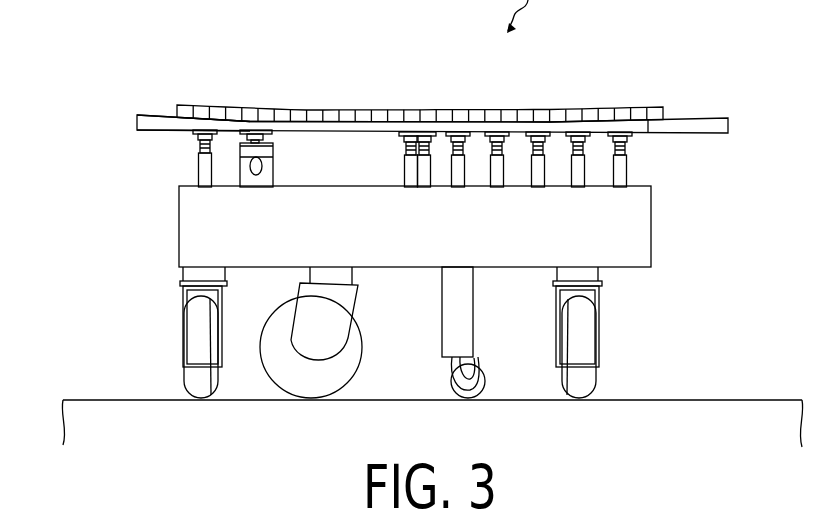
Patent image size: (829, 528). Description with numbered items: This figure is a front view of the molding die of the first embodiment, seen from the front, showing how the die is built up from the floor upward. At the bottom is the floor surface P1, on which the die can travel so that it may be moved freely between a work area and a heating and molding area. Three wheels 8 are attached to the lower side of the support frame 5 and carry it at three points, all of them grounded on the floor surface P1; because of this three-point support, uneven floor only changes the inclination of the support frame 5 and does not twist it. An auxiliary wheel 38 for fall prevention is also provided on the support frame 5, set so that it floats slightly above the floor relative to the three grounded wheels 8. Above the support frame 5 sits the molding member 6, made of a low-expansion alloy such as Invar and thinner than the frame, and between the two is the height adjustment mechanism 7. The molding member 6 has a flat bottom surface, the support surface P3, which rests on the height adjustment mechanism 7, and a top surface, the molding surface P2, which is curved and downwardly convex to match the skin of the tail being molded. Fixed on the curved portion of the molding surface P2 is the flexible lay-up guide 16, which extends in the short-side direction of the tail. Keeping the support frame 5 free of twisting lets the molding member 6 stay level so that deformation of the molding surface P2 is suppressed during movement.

The support frame 5 is at (651, 247).
The molding member 6 is at (686, 118).
The height adjustment mechanism 7 is at (587, 168).
The wheels 8 is at (172, 342).
The lay-up guide 16 is at (372, 109).
The auxiliary wheel 38 is at (482, 331).
The floor surface P1 is at (717, 399).
The molding surface P2 is at (162, 115).
The support surface P3 is at (160, 132).